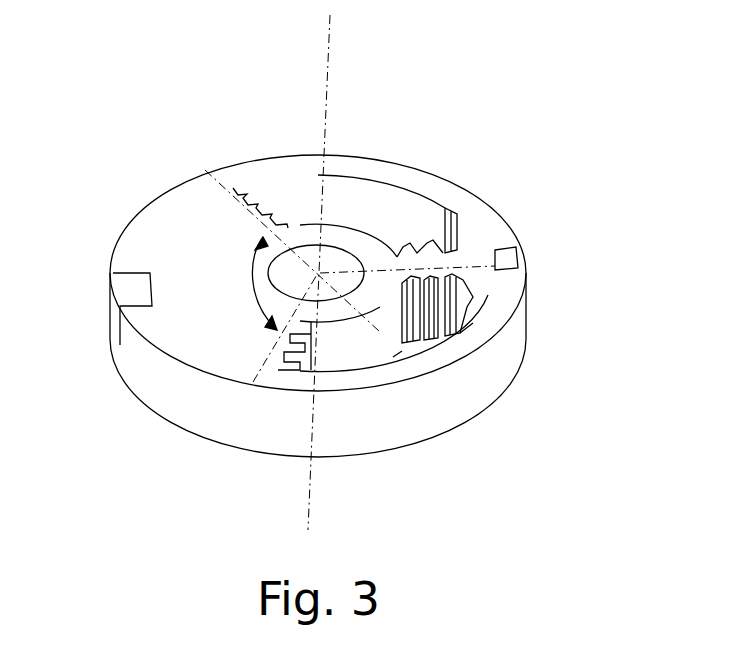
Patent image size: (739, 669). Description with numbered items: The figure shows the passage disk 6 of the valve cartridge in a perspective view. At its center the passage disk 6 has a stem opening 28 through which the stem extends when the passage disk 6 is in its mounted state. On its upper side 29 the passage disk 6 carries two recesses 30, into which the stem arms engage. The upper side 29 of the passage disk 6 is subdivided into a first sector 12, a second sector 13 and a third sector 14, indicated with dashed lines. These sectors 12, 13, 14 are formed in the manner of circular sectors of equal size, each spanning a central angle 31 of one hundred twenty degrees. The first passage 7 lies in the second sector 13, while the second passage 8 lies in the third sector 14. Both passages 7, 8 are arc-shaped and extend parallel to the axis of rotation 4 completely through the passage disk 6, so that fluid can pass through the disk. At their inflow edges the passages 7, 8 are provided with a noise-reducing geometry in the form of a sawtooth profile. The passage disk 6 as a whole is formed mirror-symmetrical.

The axis of rotation 4 is at (330, 70).
The passage disk 6 is at (556, 196).
The first passage 7 is at (425, 345).
The second passage 8 is at (446, 212).
The first sector 12 is at (193, 332).
The second sector 13 is at (482, 337).
The third sector 14 is at (437, 210).
The stem opening 28 is at (365, 310).
The upper side 29 is at (222, 355).
The recess 30 is at (133, 271).
The central angle 31 is at (245, 273).